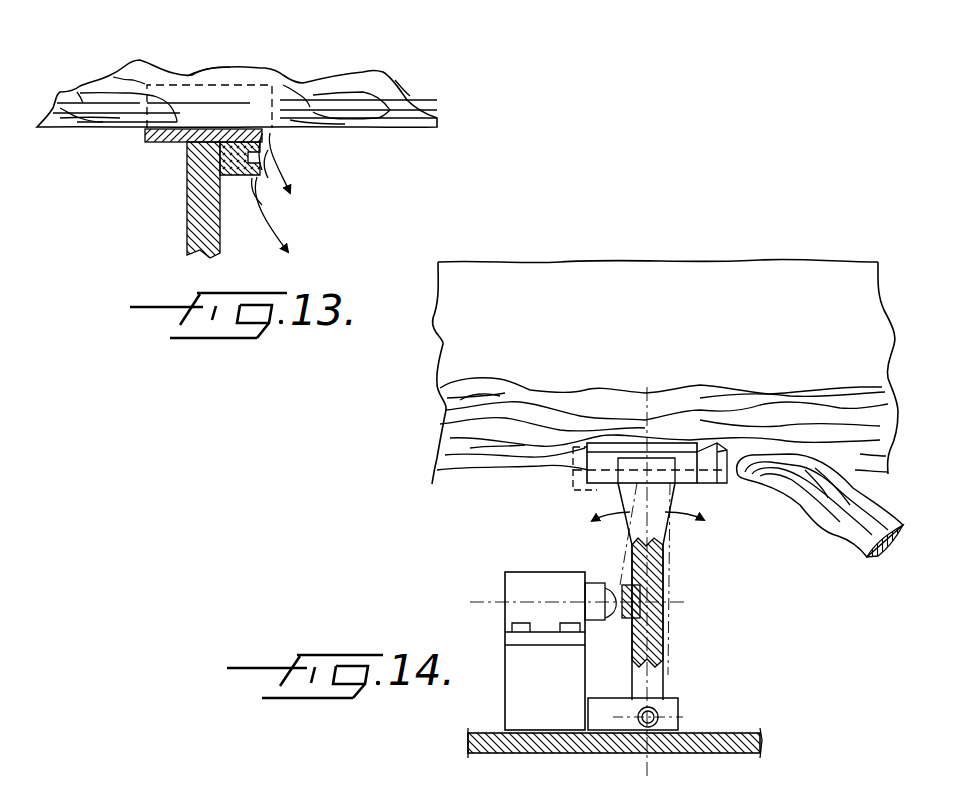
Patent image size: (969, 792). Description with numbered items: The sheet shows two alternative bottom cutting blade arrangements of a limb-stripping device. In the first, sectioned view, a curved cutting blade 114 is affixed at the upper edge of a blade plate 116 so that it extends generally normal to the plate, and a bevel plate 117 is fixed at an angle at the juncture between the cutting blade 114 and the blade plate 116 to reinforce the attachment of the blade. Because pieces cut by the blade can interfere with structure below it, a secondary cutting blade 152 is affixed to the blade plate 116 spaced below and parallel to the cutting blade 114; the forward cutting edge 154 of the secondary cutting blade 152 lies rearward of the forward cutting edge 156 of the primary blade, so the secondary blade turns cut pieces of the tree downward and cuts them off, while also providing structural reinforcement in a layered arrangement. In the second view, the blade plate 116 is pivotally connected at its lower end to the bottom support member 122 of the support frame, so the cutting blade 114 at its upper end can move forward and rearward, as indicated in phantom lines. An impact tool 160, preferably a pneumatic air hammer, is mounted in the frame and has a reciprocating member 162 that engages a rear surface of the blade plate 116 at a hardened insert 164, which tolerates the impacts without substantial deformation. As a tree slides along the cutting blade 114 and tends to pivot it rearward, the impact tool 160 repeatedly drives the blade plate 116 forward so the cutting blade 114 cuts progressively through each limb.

In FIG. 13, the cutting blade 114 is at (188, 128).
In FIG. 14, the cutting blade 114 is at (660, 443).
In FIG. 13, the forward cutting edge of primary cutting blade 156 is at (274, 125).
In FIG. 13, the bevel plate 117 is at (220, 150).
In FIG. 13, the secondary cutting blade 152 is at (228, 178).
In FIG. 13, the forward cutting edge of secondary cutting blade 154 is at (256, 174).
In FIG. 13, the blade plate 116 is at (197, 237).
In FIG. 14, the blade plate 116 is at (657, 560).
In FIG. 14, the impact tool 160 is at (528, 586).
In FIG. 14, the reciprocating member 162 is at (620, 596).
In FIG. 14, the hardened insert 164 is at (660, 588).
In FIG. 14, the bottom support member 122 is at (710, 737).